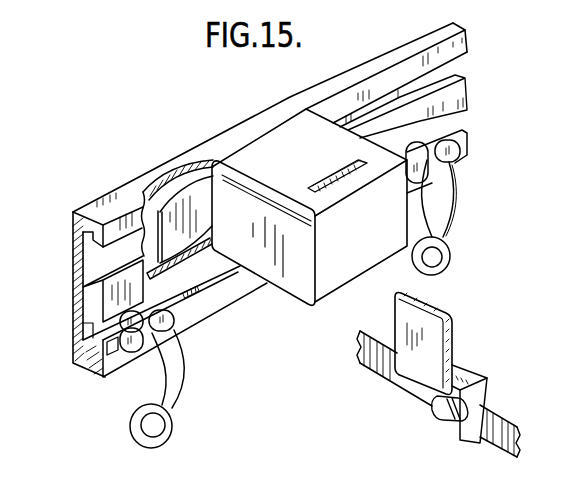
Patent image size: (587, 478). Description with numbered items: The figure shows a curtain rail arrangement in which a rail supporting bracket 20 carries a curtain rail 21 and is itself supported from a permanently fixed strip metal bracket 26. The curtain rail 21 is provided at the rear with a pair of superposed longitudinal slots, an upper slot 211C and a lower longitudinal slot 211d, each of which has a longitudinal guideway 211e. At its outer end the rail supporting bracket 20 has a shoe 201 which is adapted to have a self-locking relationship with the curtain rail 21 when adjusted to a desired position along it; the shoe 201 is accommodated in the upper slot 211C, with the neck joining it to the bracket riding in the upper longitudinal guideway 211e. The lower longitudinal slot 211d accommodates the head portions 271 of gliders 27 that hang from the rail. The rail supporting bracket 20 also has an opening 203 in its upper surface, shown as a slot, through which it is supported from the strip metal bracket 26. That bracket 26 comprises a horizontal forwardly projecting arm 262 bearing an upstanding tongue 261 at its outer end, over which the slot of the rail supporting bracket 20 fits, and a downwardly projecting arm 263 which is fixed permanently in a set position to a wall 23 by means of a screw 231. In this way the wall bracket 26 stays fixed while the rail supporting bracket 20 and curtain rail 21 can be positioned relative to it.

The rail supporting bracket 20 is at (310, 155).
The shoe 201 is at (200, 192).
The slot 203 is at (330, 181).
The curtain rail 21 is at (72, 286).
The upper slot 211C is at (73, 227).
The lower longitudinal slot 211d is at (92, 329).
The longitudinal guideway 211e is at (90, 362).
The wall 23 is at (495, 442).
The screw 231 is at (450, 414).
The strip metal bracket 26 is at (463, 368).
The upstanding tongue 261 is at (452, 323).
The horizontal forwardly projecting arm 262 is at (468, 376).
The downwardly projecting arm 263 is at (432, 415).
The glider 27 is at (172, 395).
The head portion 271 is at (113, 352).